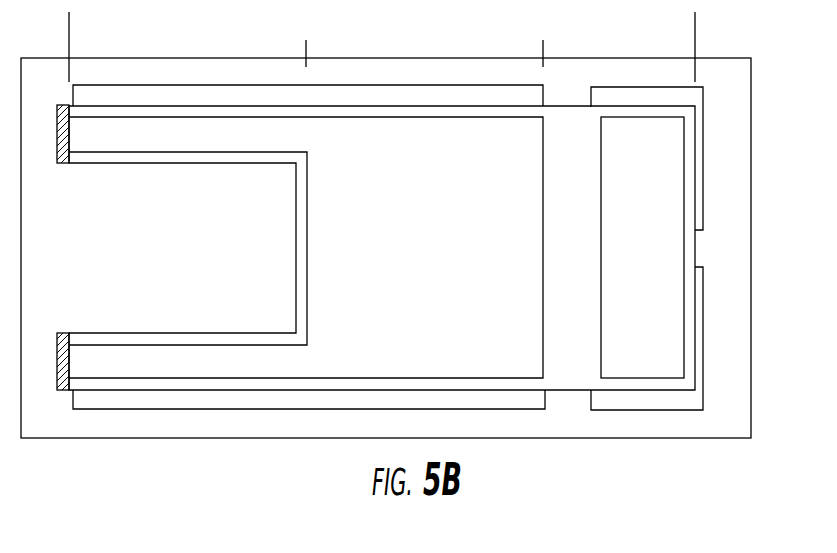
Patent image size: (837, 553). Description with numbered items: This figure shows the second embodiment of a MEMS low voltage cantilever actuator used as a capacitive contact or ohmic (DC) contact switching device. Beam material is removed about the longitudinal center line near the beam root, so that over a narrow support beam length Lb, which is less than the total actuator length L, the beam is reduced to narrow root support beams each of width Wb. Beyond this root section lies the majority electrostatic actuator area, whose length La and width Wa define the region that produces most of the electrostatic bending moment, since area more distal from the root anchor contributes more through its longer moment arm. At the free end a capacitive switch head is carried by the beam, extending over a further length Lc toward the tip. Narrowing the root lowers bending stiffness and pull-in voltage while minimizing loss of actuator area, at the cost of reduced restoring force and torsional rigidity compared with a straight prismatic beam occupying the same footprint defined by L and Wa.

The total actuator length L is at (695, 31).
The actuator area length La is at (543, 53).
The narrow width support beam length Lb is at (306, 53).
The capacitive switch head length Lc is at (695, 53).
The actuator area width Wa is at (742, 390).
The narrow width support beam width Wb is at (91, 193).